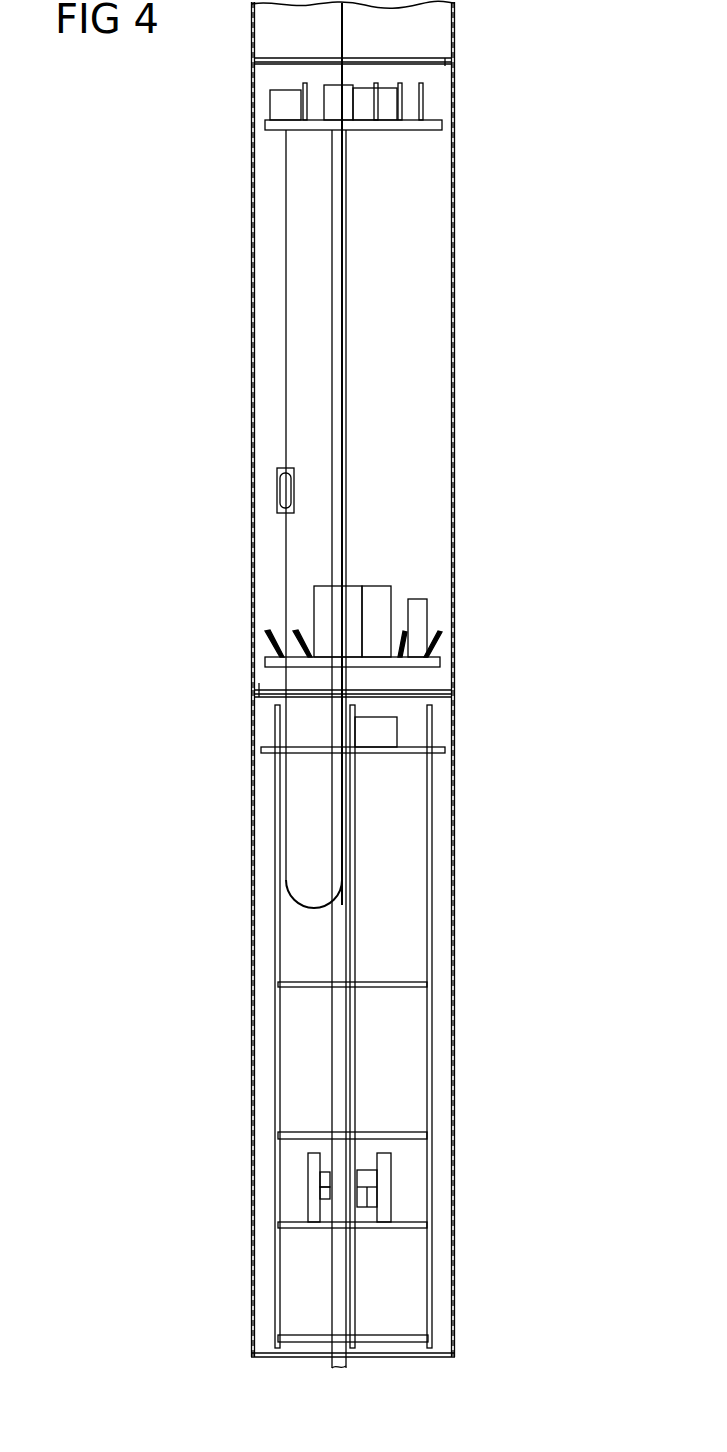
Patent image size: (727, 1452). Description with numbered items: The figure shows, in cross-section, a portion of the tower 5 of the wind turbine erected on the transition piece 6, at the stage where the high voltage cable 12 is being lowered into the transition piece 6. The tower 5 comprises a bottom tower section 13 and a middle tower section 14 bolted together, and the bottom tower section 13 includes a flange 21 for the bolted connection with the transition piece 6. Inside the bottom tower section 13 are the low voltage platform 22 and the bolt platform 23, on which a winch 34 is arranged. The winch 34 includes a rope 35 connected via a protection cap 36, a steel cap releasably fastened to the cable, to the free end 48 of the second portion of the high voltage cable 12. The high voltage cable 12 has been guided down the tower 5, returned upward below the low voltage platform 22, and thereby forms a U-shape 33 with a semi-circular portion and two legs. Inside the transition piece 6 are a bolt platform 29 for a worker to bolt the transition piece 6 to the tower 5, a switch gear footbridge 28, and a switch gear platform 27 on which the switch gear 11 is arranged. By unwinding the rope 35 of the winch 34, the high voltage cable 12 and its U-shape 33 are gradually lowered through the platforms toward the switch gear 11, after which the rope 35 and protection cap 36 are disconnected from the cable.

The tower 5 is at (542, 230).
The transition piece 6 is at (455, 857).
The switch gear 11 is at (385, 1185).
The high voltage cable 12 is at (342, 32).
The bottom tower section 13 is at (455, 373).
The middle tower section 14 is at (455, 30).
The flange 21 is at (259, 683).
The low voltage platform 22 is at (435, 660).
The bolt platform 23 is at (435, 125).
The switch gear platform 27 is at (410, 1226).
The switch gear footbridge 28 is at (410, 1135).
The bolt platform 29 is at (445, 750).
The U-shape 33 is at (315, 905).
The winch 34 is at (270, 106).
The rope 35 is at (286, 372).
The protection cap 36 is at (277, 490).
The free end 48 is at (282, 515).